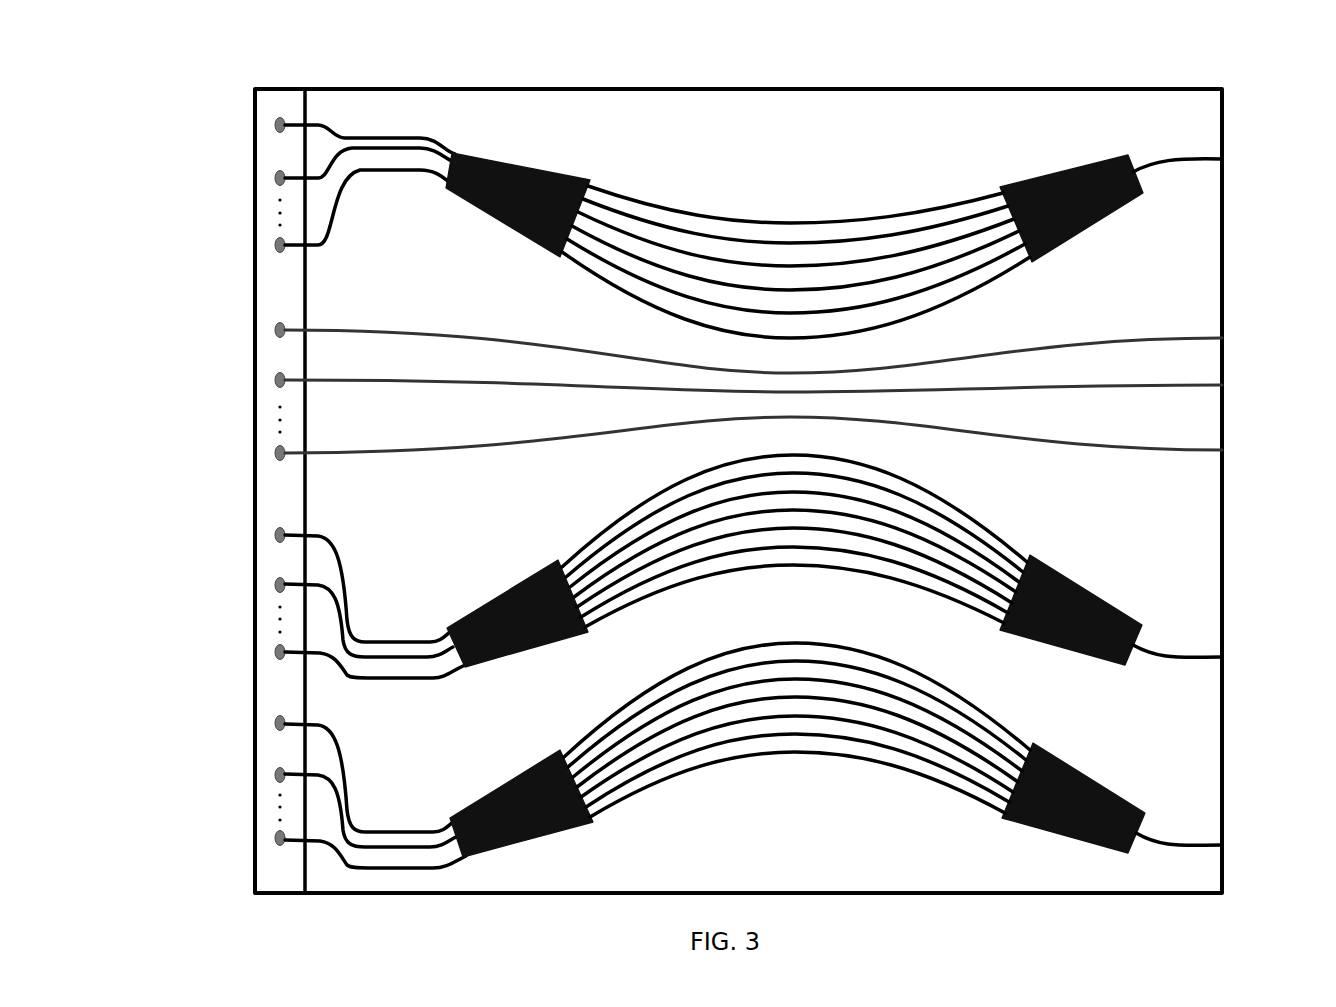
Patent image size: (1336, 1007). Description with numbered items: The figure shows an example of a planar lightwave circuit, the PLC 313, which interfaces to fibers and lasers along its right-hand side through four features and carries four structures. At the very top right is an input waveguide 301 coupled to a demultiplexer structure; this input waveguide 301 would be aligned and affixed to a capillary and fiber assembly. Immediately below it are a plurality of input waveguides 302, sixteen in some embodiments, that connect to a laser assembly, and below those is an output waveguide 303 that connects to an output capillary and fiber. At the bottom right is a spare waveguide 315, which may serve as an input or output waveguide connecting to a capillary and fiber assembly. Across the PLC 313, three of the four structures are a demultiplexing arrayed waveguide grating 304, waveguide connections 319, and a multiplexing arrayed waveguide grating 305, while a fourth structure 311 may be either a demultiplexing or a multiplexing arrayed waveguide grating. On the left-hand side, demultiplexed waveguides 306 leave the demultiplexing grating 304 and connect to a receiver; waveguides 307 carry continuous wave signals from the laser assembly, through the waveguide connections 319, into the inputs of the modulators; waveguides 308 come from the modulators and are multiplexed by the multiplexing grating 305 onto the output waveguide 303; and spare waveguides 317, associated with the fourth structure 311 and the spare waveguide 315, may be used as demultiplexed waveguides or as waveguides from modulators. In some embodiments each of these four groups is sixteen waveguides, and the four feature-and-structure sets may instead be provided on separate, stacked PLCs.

The input waveguide 301 is at (1219, 164).
The plurality of input waveguides 302 is at (1225, 325).
The output waveguide 303 is at (1219, 661).
The demultiplexing arrayed waveguide grating (AWG) 304 is at (794, 245).
The multiplexing AWG 305 is at (794, 561).
The demultiplexed waveguides 306 is at (245, 107).
The waveguides 307 is at (245, 311).
The waveguides 308 is at (245, 515).
The fourth structure 311 is at (797, 750).
The PLC 313 is at (637, 89).
The spare waveguide 315 is at (1220, 844).
The spare waveguides 317 is at (245, 705).
The waveguide connections 319 is at (562, 468).